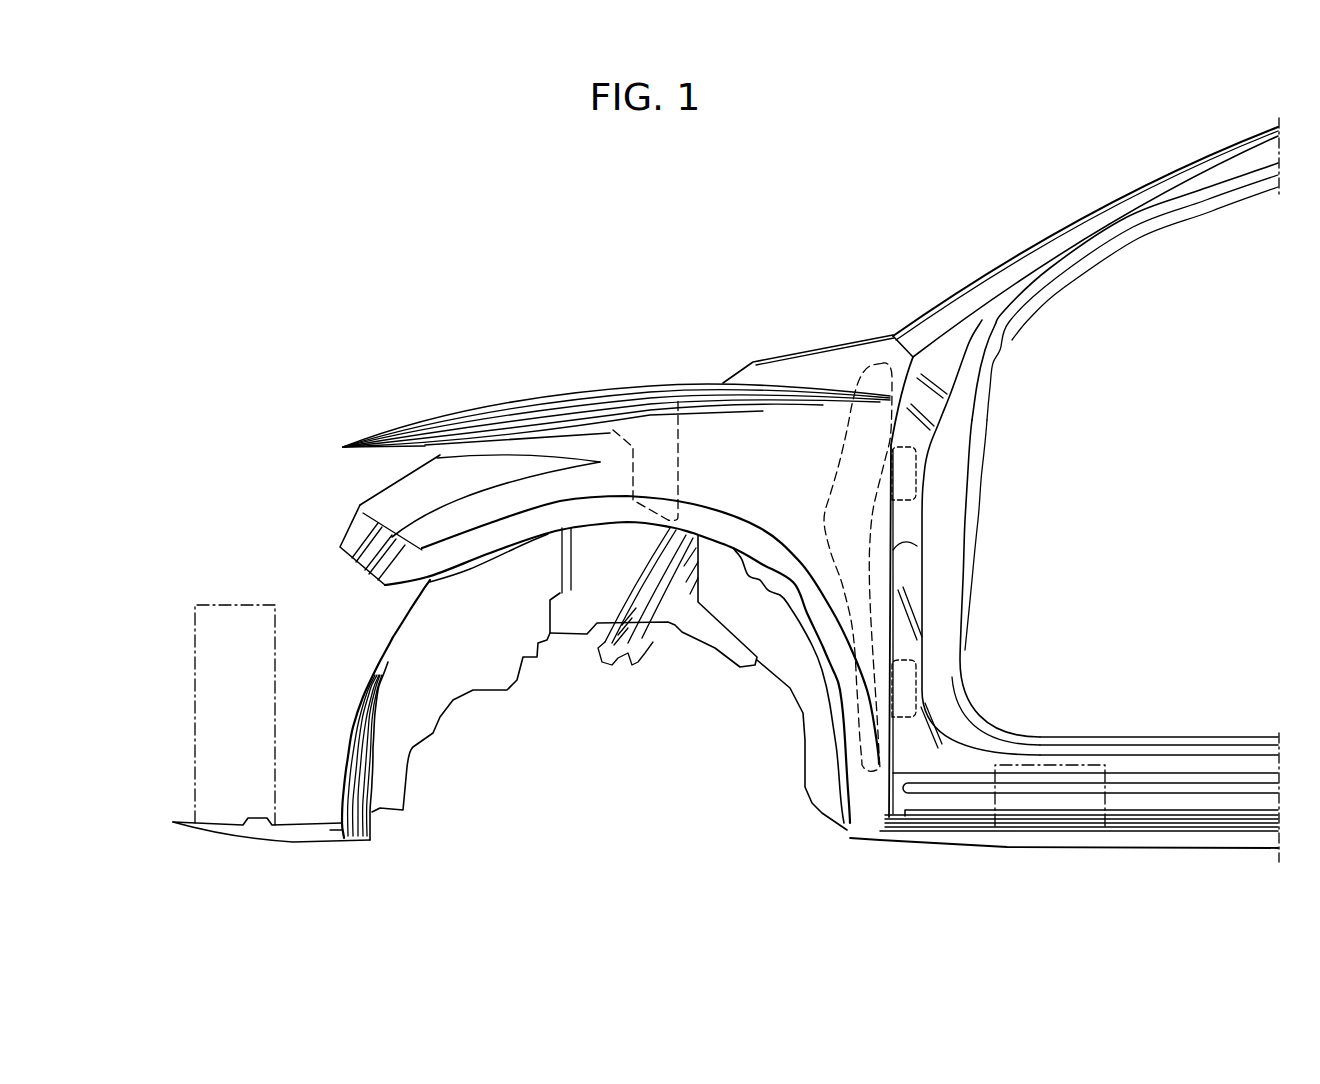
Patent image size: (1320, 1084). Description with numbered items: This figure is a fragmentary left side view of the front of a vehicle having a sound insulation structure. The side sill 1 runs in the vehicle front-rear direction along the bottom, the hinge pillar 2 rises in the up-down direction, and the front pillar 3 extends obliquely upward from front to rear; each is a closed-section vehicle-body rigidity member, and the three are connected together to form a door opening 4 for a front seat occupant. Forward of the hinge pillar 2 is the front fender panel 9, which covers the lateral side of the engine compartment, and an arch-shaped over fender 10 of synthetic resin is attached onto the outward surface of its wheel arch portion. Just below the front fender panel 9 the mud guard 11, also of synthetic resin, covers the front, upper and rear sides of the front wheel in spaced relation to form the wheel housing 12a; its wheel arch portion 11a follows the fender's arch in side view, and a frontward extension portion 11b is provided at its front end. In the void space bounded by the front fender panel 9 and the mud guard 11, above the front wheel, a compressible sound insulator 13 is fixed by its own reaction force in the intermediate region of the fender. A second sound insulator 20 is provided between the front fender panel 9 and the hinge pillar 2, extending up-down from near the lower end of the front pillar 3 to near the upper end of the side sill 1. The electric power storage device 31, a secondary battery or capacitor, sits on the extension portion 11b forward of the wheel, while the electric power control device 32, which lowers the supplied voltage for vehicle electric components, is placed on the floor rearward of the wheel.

The side sill 1 is at (1210, 852).
The hinge pillar 2 is at (965, 551).
The front pillar 3 is at (1131, 191).
The door opening 4 is at (1207, 532).
The front fender panel 9 is at (563, 430).
The over fender 10 is at (742, 532).
The mud guard 11 is at (511, 712).
The wheel arch portion 11a is at (405, 623).
The frontward extension portion 11b is at (258, 832).
The wheel housing 12a is at (583, 765).
The sound insulator 13 is at (613, 430).
The second sound insulator 20 is at (840, 449).
The electric power storage device 31 is at (207, 651).
The electric power control device 32 is at (1060, 738).